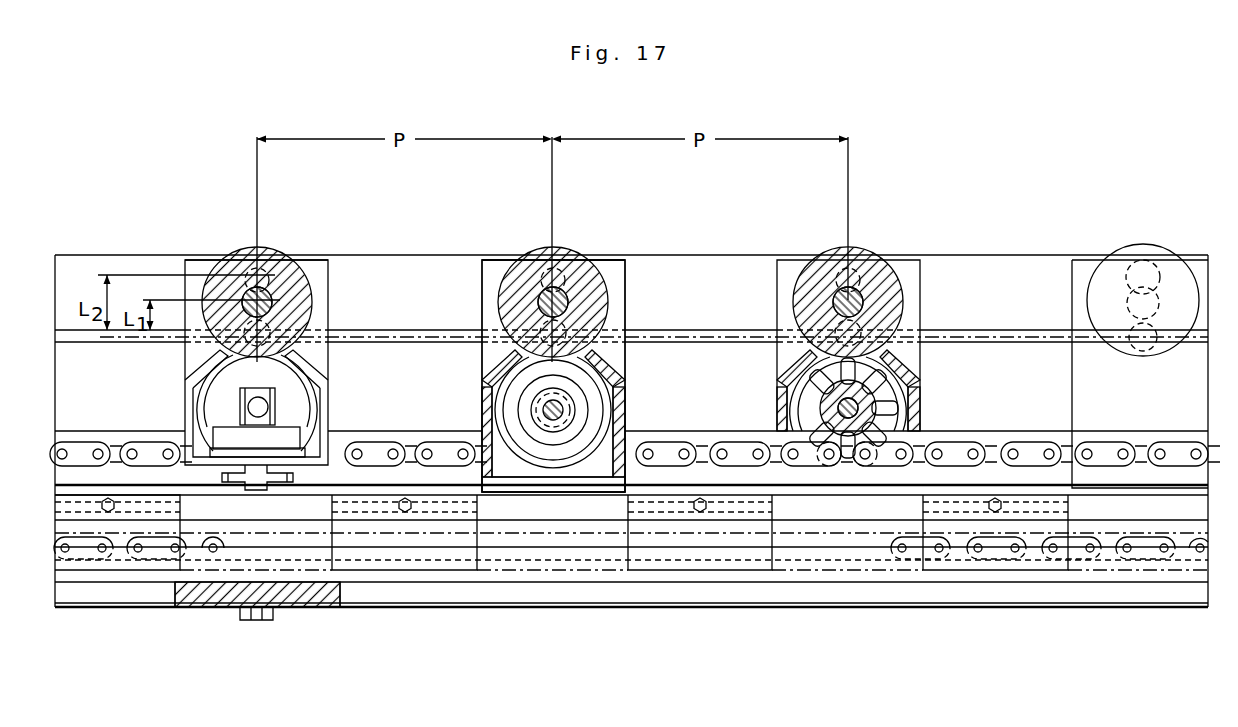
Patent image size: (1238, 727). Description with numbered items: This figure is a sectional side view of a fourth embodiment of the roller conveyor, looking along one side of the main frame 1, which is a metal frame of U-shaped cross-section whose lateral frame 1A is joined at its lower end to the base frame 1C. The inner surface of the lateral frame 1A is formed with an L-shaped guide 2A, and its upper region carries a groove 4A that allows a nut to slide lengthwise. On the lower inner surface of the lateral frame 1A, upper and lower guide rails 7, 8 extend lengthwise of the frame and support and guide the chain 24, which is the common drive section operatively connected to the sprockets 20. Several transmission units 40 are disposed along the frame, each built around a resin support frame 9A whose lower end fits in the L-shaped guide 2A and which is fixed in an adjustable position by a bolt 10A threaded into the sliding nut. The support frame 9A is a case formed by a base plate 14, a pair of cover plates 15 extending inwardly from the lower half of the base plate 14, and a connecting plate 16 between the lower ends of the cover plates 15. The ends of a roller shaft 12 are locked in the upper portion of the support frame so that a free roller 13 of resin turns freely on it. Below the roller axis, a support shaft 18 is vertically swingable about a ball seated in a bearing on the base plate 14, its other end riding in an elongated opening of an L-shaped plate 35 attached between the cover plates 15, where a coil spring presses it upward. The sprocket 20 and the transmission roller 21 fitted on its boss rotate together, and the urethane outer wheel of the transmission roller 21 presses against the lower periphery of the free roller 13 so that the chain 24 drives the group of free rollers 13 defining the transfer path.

The main frame 1 is at (173, 608).
The lateral frame 1A is at (72, 381).
The base frame 1C is at (301, 600).
The L-shaped guide 2A is at (1176, 430).
The groove 4A is at (710, 335).
The upper guide rail 7 is at (810, 477).
The lower guide rail 8 is at (977, 560).
The support frame 9A is at (334, 288).
The bolt 10A is at (334, 312).
The roller shaft 12 is at (547, 300).
The free roller 13 is at (512, 322).
The base plate 14 is at (192, 350).
The cover plate 15 is at (190, 405).
The connecting plate 16 is at (557, 486).
The support shaft 18 is at (543, 405).
The sprocket 20 is at (797, 408).
The transmission roller 21 is at (290, 402).
The chain 24 is at (1017, 437).
The L-shaped plate 35 is at (307, 458).
The transmission unit 40 is at (470, 278).